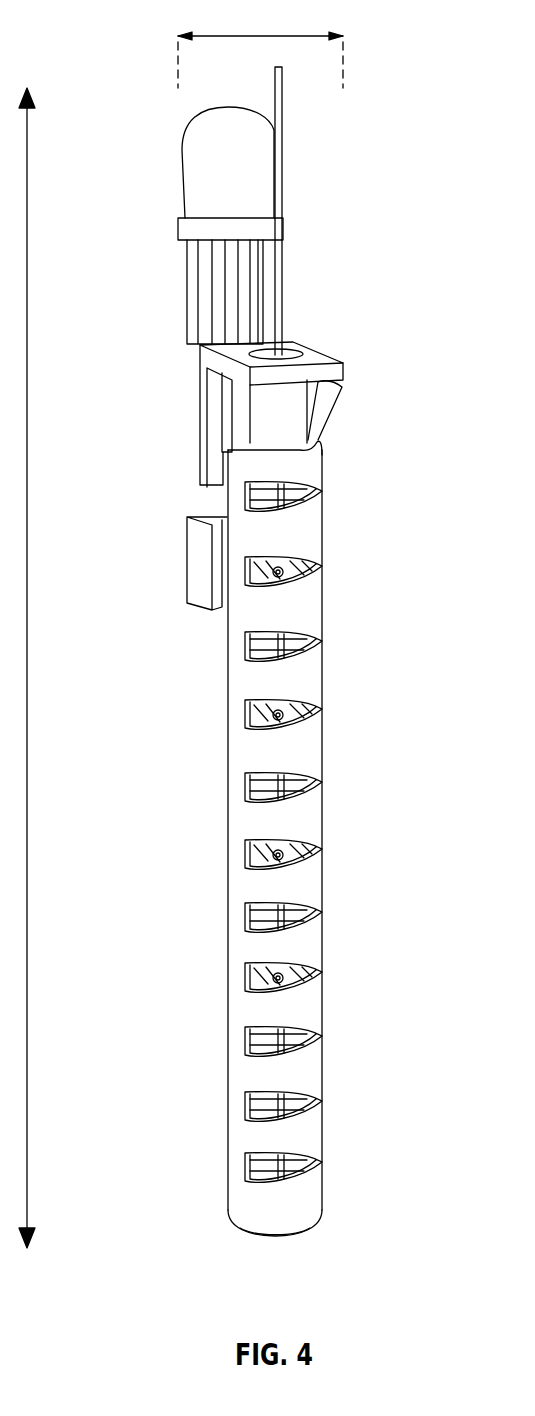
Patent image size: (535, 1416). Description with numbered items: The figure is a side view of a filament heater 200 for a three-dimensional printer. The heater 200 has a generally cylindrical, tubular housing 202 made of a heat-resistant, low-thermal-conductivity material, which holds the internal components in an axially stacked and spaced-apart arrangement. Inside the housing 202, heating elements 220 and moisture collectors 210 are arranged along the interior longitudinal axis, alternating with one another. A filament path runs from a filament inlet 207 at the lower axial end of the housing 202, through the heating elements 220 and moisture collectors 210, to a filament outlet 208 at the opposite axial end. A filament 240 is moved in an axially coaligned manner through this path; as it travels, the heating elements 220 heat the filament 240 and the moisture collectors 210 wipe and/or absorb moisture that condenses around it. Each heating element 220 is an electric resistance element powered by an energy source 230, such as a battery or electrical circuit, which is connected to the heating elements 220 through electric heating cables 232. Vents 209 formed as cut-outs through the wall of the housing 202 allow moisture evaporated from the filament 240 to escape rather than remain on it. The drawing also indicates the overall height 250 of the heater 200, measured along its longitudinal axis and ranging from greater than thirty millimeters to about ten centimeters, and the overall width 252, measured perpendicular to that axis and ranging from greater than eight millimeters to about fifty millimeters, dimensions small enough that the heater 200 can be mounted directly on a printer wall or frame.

The heater 200 is at (146, 31).
The housing 202 is at (312, 940).
The filament inlet 207 is at (262, 1235).
The filament outlet 208 is at (292, 339).
The vent 209 is at (319, 631).
The moisture collector 210 is at (250, 970).
The heating element 220 is at (250, 780).
The energy source 230 is at (187, 140).
The electric heating cable 232 is at (190, 293).
The filament 240 is at (283, 97).
The overall height 250 is at (27, 190).
The overall width 252 is at (262, 34).